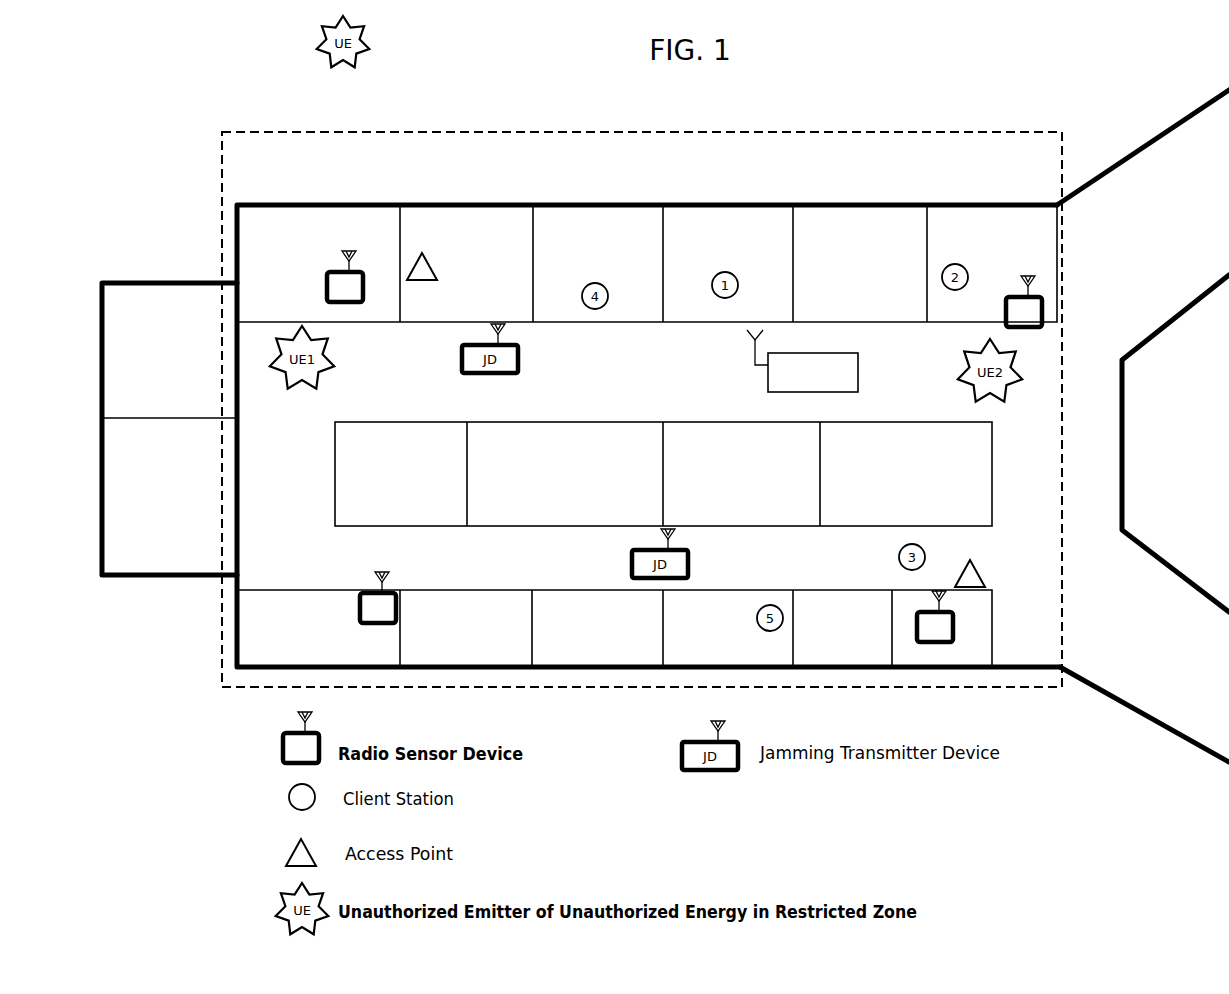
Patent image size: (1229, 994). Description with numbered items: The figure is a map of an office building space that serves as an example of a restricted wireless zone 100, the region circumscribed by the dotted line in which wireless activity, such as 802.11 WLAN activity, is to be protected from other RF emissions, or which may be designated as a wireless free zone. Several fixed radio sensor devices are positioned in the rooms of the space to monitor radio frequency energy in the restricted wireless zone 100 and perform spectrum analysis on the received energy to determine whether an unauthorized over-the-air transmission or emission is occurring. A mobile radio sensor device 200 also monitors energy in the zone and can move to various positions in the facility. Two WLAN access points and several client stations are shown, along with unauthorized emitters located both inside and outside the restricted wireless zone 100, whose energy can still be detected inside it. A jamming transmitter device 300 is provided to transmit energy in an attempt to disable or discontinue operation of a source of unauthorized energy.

The restricted wireless zone 100 is at (458, 130).
The jamming transmitter device 300 is at (462, 362).
The mobile radio sensor device 200 is at (858, 362).